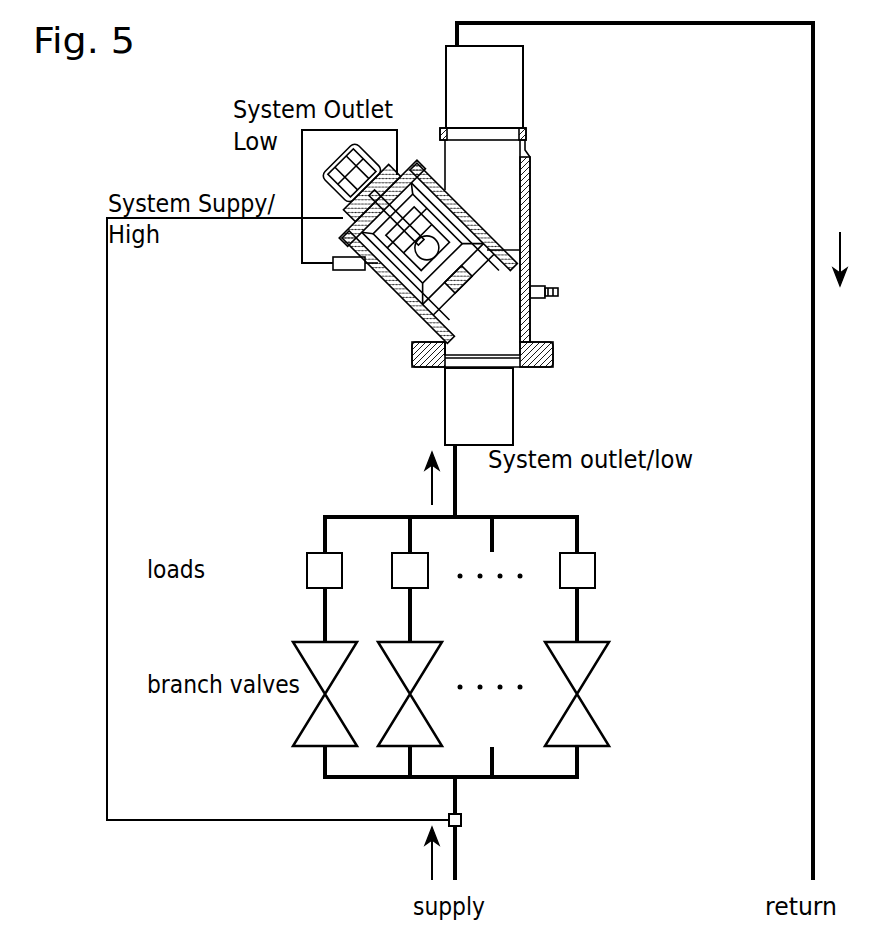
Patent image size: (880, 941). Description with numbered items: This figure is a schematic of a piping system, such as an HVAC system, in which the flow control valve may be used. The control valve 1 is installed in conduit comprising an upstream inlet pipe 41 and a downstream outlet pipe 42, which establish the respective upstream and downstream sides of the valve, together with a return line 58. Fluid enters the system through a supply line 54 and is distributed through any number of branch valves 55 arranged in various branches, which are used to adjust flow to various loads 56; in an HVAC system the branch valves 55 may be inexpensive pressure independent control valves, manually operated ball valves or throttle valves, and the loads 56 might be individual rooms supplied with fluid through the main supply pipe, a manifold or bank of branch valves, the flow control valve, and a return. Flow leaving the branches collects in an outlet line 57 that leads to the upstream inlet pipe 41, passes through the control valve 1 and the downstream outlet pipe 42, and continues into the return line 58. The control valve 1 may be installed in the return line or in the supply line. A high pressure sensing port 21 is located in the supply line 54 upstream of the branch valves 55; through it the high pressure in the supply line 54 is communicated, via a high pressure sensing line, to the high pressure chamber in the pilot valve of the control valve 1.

The control valve 1 is at (570, 232).
The downstream outlet pipe 42 is at (523, 87).
The upstream inlet pipe 41 is at (513, 420).
The return line 58 is at (815, 420).
The outlet line 57 is at (455, 490).
The loads 56 is at (314, 553).
The branch valves 55 is at (300, 748).
The high pressure sensing port 21 is at (462, 818).
The supply line 54 is at (458, 846).